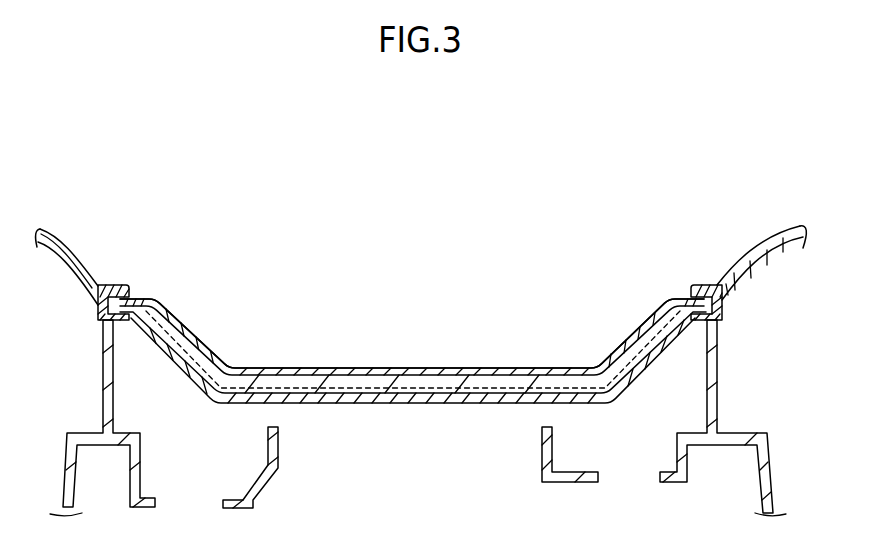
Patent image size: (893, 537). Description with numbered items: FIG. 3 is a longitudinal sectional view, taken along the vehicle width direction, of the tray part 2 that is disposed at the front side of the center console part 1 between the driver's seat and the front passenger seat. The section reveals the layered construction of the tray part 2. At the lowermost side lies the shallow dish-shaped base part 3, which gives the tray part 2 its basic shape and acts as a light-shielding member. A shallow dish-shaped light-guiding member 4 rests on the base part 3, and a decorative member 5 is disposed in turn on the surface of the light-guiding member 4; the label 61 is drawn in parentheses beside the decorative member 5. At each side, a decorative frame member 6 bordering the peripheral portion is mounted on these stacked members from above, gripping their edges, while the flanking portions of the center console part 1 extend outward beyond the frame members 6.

The center console part 1 is at (66, 229).
The tray part 2 is at (413, 267).
The base part 3 is at (348, 392).
The light-guiding member 4 is at (422, 388).
The decorative member 5 is at (490, 369).
The surface layer 61 is at (412, 333).
The decorative frame member 6 is at (116, 284).